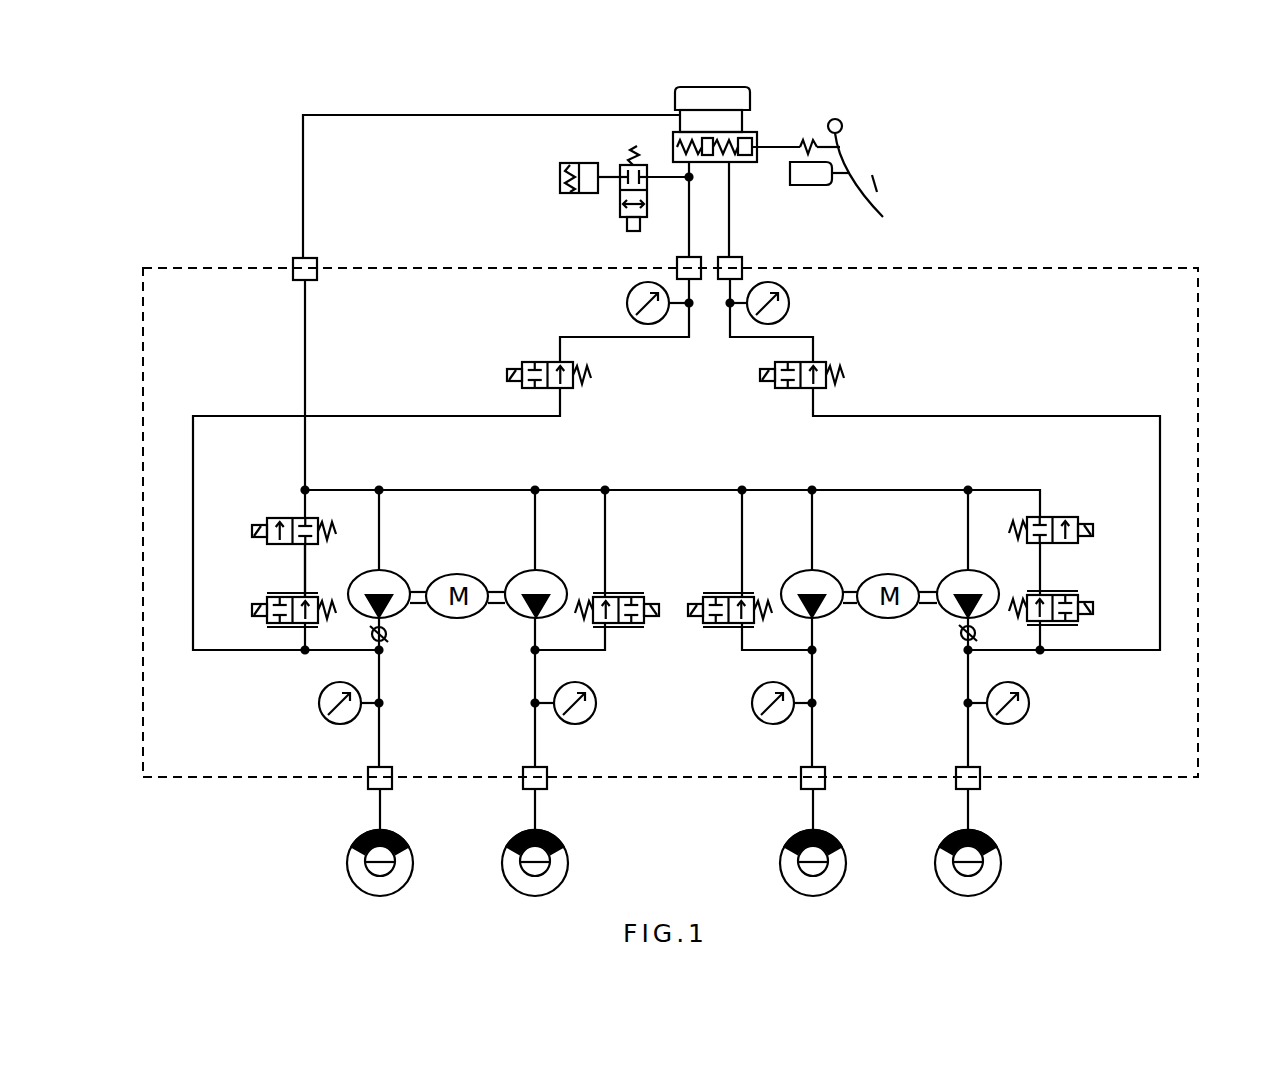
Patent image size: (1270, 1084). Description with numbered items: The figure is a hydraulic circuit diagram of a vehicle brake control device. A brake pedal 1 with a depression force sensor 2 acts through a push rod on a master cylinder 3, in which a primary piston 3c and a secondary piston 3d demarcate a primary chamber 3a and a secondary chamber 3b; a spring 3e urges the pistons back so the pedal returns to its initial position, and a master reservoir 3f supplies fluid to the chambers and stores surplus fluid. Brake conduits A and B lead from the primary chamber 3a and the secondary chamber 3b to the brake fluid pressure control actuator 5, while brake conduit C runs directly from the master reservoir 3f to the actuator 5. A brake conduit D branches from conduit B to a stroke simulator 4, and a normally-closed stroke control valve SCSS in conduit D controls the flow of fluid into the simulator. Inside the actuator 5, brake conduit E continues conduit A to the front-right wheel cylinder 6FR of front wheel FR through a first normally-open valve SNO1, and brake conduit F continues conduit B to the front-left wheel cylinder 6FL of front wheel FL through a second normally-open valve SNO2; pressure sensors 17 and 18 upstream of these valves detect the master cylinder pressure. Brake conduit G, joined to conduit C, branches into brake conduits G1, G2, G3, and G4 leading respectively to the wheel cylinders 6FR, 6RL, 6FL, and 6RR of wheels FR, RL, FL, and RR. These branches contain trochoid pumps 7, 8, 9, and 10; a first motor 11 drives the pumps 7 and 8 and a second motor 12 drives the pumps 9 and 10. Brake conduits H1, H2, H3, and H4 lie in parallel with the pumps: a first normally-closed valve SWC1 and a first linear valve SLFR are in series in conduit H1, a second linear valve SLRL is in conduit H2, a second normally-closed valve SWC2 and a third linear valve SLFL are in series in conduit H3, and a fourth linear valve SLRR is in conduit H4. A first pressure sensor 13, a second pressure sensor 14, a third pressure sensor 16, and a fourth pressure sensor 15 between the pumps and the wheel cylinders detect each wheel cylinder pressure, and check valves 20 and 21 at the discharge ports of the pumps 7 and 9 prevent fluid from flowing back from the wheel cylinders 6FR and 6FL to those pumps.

The brake pedal 1 is at (872, 177).
The depression force sensor 2 is at (820, 185).
The master cylinder 3 is at (716, 158).
The primary chamber 3a is at (748, 162).
The secondary chamber 3b is at (692, 160).
The primary piston 3c is at (752, 139).
The secondary piston 3d is at (705, 140).
The spring 3e is at (729, 160).
The master reservoir 3f is at (688, 88).
The stroke simulator 4 is at (560, 178).
The brake fluid pressure control actuator 5 is at (1198, 280).
The front left wheel cylinder 6FL is at (410, 845).
The rear right wheel cylinder 6RR is at (568, 845).
The rear left wheel cylinder 6RL is at (844, 845).
The front right wheel cylinder 6FR is at (1001, 845).
The first pump 7 is at (952, 618).
The second pump 8 is at (830, 618).
The third pump 9 is at (398, 618).
The fourth pump 10 is at (515, 618).
The first motor 11 is at (891, 618).
The second motor 12 is at (458, 618).
The first pressure sensor 13 is at (1008, 724).
The second pressure sensor 14 is at (773, 724).
The fourth pressure sensor 15 is at (578, 724).
The third pressure sensor 16 is at (340, 724).
The pressure sensor 17 is at (789, 303).
The pressure sensor 18 is at (627, 303).
The check valve 20 is at (975, 634).
The check valve 21 is at (372, 634).
The brake conduit A is at (735, 245).
The brake conduit B is at (687, 245).
The brake conduit C is at (427, 115).
The brake conduit D is at (611, 194).
The brake conduit E is at (1087, 415).
The brake conduit F is at (372, 416).
The brake conduit G is at (303, 328).
The brake conduit G1 is at (968, 520).
The brake conduit G2 is at (812, 520).
The brake conduit G3 is at (379, 518).
The brake conduit G4 is at (535, 522).
The brake conduit H1 is at (988, 490).
The brake conduit H2 is at (742, 520).
The brake conduit H3 is at (305, 560).
The brake conduit H4 is at (605, 520).
The stroke control valve SCSS is at (588, 194).
The first normally-open valve SNO1 is at (825, 362).
The second normally-open valve SNO2 is at (522, 362).
The first normally-closed valve SWC1 is at (1068, 517).
The second normally-closed valve SWC2 is at (275, 518).
The third linear valve SLFL is at (291, 597).
The first linear valve SLFR is at (1058, 594).
The fourth linear valve SLRR is at (616, 597).
The second linear valve SLRL is at (719, 597).
The front wheel FL is at (413, 863).
The rear wheel RR is at (568, 863).
The rear wheel RL is at (846, 863).
The front wheel FR is at (1001, 863).